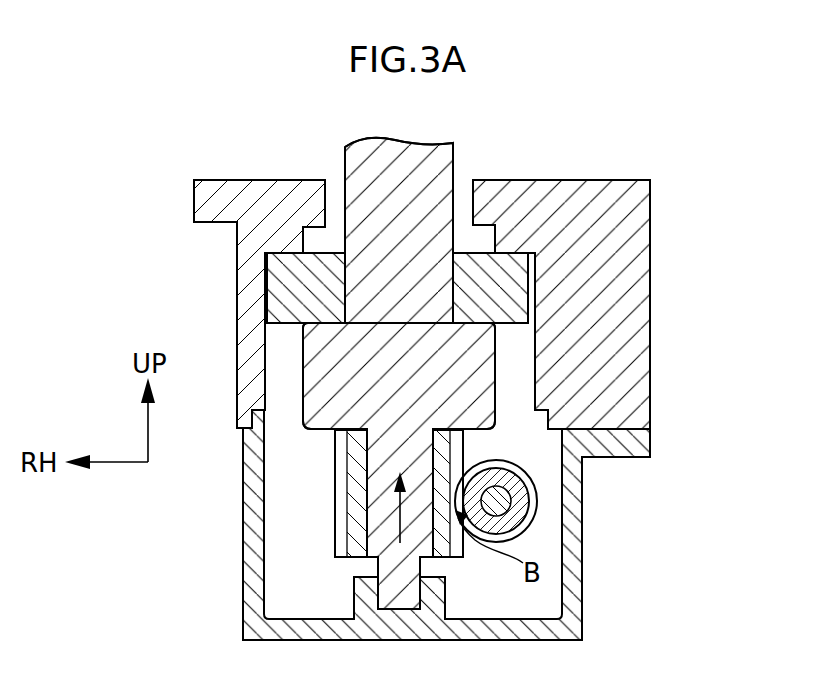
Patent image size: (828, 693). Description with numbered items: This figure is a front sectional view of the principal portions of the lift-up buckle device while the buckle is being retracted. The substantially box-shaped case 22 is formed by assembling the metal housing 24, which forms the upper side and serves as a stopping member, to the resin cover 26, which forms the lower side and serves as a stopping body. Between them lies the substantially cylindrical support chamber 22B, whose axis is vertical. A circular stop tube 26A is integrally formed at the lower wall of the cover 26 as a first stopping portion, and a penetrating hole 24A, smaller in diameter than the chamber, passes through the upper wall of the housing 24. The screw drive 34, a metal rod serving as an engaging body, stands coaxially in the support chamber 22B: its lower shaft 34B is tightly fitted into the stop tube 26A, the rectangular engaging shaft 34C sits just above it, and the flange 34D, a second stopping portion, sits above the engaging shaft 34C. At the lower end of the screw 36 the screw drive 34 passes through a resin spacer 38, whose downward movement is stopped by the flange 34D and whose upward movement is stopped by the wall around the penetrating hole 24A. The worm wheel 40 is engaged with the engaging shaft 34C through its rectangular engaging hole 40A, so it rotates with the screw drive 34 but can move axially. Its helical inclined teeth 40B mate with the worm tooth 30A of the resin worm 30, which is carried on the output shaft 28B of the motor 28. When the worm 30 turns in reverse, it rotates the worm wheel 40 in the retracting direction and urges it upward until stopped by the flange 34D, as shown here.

The case 22 is at (460, 285).
The support chamber 22B is at (268, 506).
The housing 24 is at (594, 285).
The penetrating hole 24A is at (473, 203).
The cover 26 is at (405, 525).
The stop tube 26A is at (354, 595).
The motor 28 is at (496, 501).
The output shaft 28B is at (589, 515).
The worm 30 is at (585, 511).
The worm tooth 30A is at (530, 500).
The screw drive 34 is at (346, 356).
The lower shaft 34B is at (421, 563).
The engaging shaft 34C is at (357, 494).
The flange 34D is at (300, 352).
The screw 36 is at (455, 164).
The spacer 38 is at (267, 279).
The worm wheel 40 is at (407, 493).
The engaging hole 40A is at (373, 528).
The inclined teeth 40B is at (460, 450).